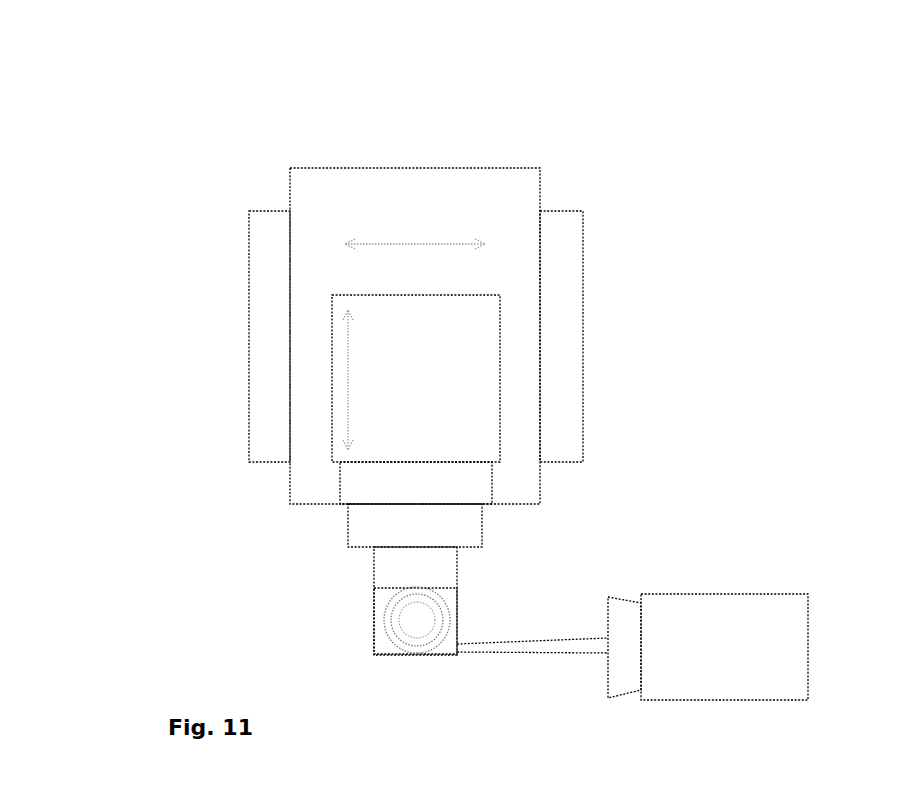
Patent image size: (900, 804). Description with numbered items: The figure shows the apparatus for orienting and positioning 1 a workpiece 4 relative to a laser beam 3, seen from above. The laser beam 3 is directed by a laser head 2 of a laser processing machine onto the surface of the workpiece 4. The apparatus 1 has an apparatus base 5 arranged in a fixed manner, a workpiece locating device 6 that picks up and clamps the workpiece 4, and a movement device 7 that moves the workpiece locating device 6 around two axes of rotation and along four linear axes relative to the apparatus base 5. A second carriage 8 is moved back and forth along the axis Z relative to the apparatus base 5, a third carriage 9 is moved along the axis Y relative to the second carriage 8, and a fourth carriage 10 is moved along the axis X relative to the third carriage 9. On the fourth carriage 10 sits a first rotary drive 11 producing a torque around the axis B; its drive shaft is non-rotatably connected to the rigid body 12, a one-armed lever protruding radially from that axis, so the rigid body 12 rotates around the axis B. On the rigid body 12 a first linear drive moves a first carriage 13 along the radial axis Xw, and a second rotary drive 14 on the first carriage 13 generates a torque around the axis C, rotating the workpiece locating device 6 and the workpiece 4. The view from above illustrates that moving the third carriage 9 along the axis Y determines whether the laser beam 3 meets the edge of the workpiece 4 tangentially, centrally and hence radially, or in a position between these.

The apparatus for orienting and positioning 1 is at (227, 159).
The laser head 2 is at (772, 618).
The laser beam 3 is at (553, 645).
The workpiece 4 is at (415, 619).
The apparatus base 5 is at (568, 313).
The workpiece locating device 6 is at (437, 608).
The movement device 7 is at (215, 413).
The second carriage 8 is at (490, 198).
The third carriage 9 is at (473, 341).
The fourth carriage 10 is at (468, 485).
The first rotary drive 11 is at (383, 521).
The rigid body 12 is at (397, 563).
The first carriage 13 is at (383, 602).
The second rotary drive 14 is at (380, 613).